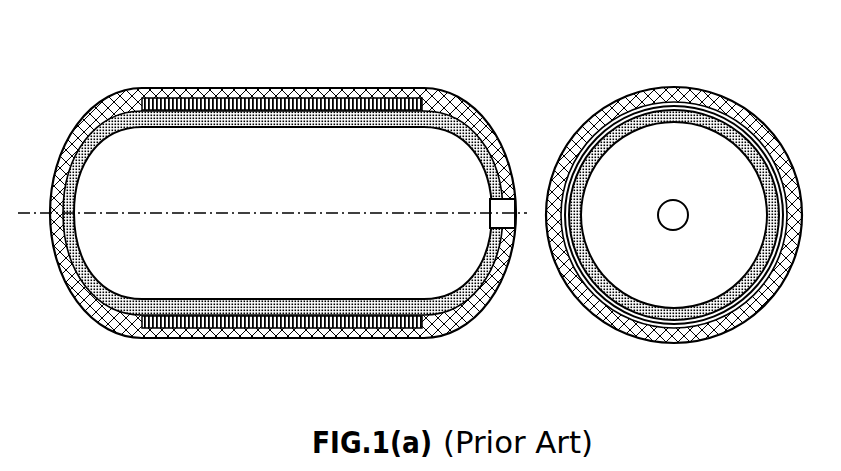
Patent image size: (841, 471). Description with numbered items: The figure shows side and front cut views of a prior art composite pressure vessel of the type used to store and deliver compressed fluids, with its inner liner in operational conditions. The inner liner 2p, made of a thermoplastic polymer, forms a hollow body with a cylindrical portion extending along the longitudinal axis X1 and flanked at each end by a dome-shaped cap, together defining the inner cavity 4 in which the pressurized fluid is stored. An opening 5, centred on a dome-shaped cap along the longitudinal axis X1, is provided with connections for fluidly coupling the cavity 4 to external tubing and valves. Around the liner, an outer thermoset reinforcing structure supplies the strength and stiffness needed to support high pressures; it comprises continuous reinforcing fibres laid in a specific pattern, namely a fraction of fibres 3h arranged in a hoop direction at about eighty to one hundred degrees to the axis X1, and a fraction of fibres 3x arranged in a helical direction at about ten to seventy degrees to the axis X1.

The inner liner 2p is at (440, 98).
The fibres arranged in a hoop direction 3h is at (258, 110).
The fibres arranged in a helical direction 3x is at (143, 87).
The inner cavity 4 is at (438, 191).
The opening 5 is at (512, 199).
The longitudinal axis X1 is at (272, 200).